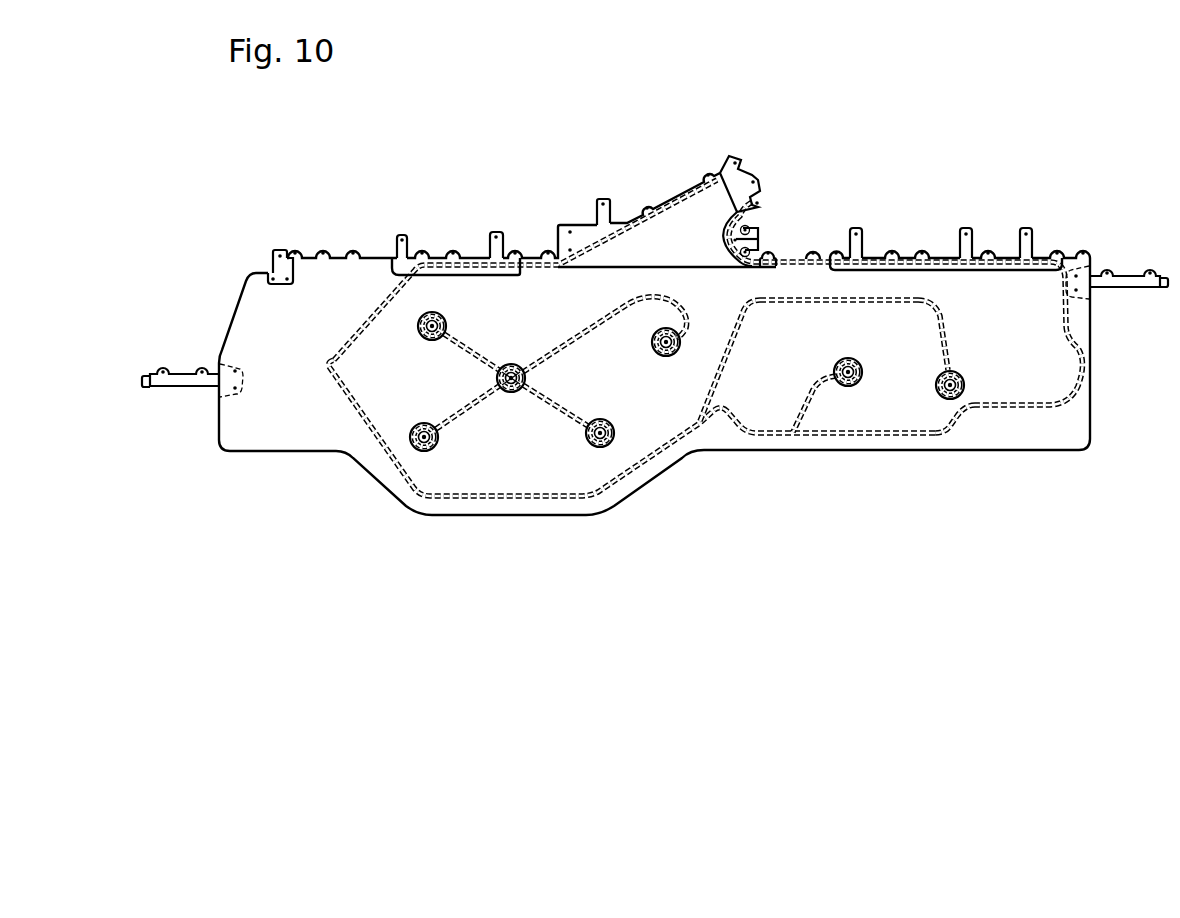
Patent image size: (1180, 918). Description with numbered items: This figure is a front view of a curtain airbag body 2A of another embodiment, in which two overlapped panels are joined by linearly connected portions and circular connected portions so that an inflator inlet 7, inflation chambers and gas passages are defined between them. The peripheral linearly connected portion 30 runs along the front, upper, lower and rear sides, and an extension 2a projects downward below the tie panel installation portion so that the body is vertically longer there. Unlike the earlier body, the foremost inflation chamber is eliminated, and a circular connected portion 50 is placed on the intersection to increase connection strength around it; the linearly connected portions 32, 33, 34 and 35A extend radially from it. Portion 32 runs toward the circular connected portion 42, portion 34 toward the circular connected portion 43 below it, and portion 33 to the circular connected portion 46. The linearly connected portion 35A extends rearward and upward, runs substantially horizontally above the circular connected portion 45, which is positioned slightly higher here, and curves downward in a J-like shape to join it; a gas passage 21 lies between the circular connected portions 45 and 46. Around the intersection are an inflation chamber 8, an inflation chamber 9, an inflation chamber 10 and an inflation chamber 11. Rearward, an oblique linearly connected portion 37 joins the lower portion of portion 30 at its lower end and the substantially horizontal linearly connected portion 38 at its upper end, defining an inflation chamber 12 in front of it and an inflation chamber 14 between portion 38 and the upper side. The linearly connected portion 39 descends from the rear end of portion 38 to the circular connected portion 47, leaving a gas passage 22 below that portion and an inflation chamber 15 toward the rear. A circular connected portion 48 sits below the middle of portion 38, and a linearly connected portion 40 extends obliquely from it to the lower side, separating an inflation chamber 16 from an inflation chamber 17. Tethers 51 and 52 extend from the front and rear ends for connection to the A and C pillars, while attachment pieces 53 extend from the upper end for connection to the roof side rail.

The curtain airbag body 2A is at (857, 138).
The extension 2a is at (472, 510).
The inflator inlet 7 is at (760, 196).
The inflation chamber 8 is at (520, 315).
The inflation chamber 9 is at (423, 390).
The inflation chamber 10 is at (533, 467).
The inflation chamber 11 is at (620, 362).
The inflation chamber 12 is at (693, 399).
The inflation chamber 14 is at (821, 295).
The inflation chamber 15 is at (1033, 345).
The inflation chamber 16 is at (903, 408).
The inflation chamber 17 is at (793, 365).
The gas passage 21 is at (643, 412).
The gas passage 22 is at (966, 402).
The linearly connected portion 30 is at (673, 200).
The linearly connected portion 32 is at (466, 344).
The linearly connected portion 33 is at (564, 407).
The linearly connected portion 34 is at (460, 416).
The linearly connected portion 35A is at (580, 333).
The linearly connected portion 37 is at (731, 356).
The linearly connected portion 38 is at (824, 304).
The linearly connected portion 39 is at (946, 328).
The linearly connected portion 40 is at (814, 404).
The circular connected portion 42 is at (446, 314).
The circular connected portion 43 is at (436, 449).
The circular connected portion 45 is at (680, 345).
The circular connected portion 46 is at (605, 446).
The circular connected portion 47 is at (966, 384).
The circular connected portion 48 is at (864, 366).
The circular connected portion 50 is at (526, 378).
The tether 51 is at (176, 387).
The tether 52 is at (1112, 272).
The attachment piece 53 is at (272, 252).